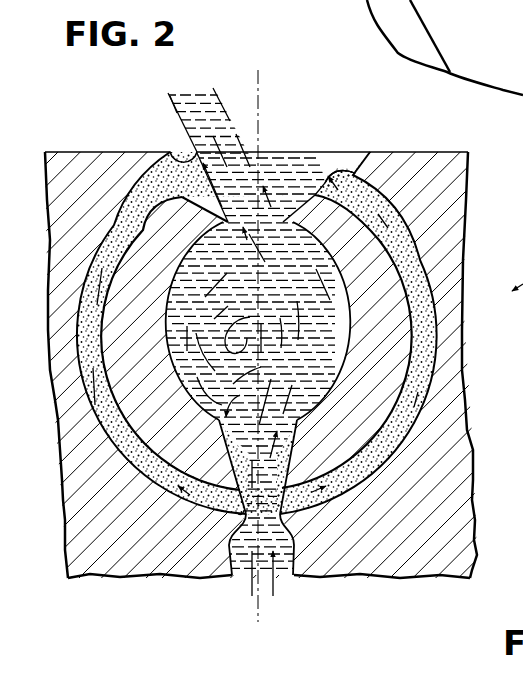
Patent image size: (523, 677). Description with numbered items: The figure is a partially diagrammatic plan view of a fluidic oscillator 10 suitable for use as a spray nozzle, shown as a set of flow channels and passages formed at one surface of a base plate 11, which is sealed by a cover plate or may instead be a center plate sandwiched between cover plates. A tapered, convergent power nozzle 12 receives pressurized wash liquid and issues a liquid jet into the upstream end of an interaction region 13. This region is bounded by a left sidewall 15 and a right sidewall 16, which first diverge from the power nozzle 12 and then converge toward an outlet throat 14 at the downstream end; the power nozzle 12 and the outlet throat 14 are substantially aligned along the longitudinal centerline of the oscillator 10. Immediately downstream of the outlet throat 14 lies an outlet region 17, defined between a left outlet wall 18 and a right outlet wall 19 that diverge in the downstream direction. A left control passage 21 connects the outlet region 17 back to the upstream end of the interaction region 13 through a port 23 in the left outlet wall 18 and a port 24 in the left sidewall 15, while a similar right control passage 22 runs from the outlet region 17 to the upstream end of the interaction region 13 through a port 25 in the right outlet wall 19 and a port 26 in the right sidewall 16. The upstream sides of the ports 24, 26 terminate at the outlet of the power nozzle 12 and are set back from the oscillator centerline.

The fluidic oscillator 10 is at (380, 572).
The base plate 11 is at (128, 556).
The power nozzle 12 is at (276, 518).
The interaction region 13 is at (226, 428).
The outlet throat 14 is at (267, 240).
The left sidewall 15 is at (166, 348).
The right sidewall 16 is at (343, 344).
The outlet region 17 is at (290, 182).
The left outlet wall 18 is at (178, 158).
The right outlet wall 19 is at (314, 204).
The left control passage 21 is at (106, 237).
The right control passage 22 is at (422, 250).
The port 23 is at (186, 200).
The port 24 is at (238, 514).
The port 25 is at (363, 185).
The port 26 is at (294, 482).